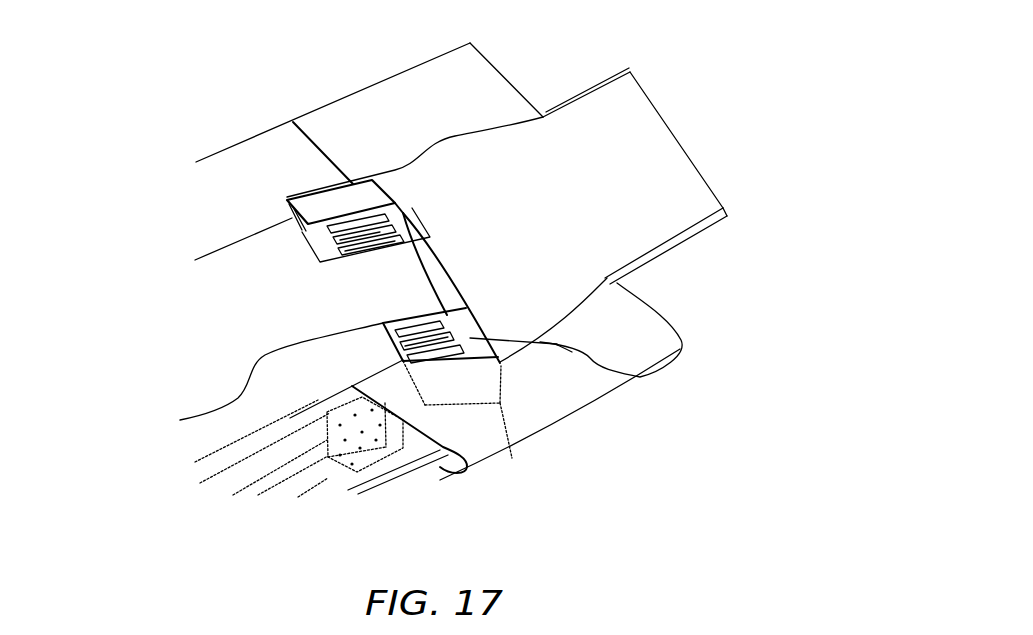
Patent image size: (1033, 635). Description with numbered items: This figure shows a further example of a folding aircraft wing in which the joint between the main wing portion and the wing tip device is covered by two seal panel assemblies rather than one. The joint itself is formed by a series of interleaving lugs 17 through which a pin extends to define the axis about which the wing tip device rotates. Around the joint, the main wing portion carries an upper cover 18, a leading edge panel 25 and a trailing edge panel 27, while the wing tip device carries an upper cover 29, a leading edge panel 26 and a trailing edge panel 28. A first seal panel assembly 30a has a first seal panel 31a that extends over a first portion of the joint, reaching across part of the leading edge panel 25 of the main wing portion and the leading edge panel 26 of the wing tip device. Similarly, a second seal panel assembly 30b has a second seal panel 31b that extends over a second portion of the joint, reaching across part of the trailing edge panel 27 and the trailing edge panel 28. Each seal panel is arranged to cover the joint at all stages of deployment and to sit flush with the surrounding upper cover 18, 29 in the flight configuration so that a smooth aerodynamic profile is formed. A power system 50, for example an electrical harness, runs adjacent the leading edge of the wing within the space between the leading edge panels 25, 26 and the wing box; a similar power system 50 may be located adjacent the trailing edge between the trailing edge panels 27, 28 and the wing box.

The interleaving lugs 17 is at (467, 130).
The upper cover of the main wing portion 18 is at (303, 393).
The leading edge panel of the main wing portion 25 is at (477, 438).
The leading edge panel of the wing tip device 26 is at (577, 385).
The trailing edge panel of the main wing portion 27 is at (267, 173).
The trailing edge panel of the wing tip device 28 is at (402, 85).
The upper cover of the wing tip device 29 is at (590, 172).
The first seal panel assembly 30a is at (463, 382).
The second seal panel assembly 30b is at (350, 199).
The first seal panel 31a is at (438, 387).
The second seal panel 31b is at (367, 197).
The power system 50 is at (385, 500).